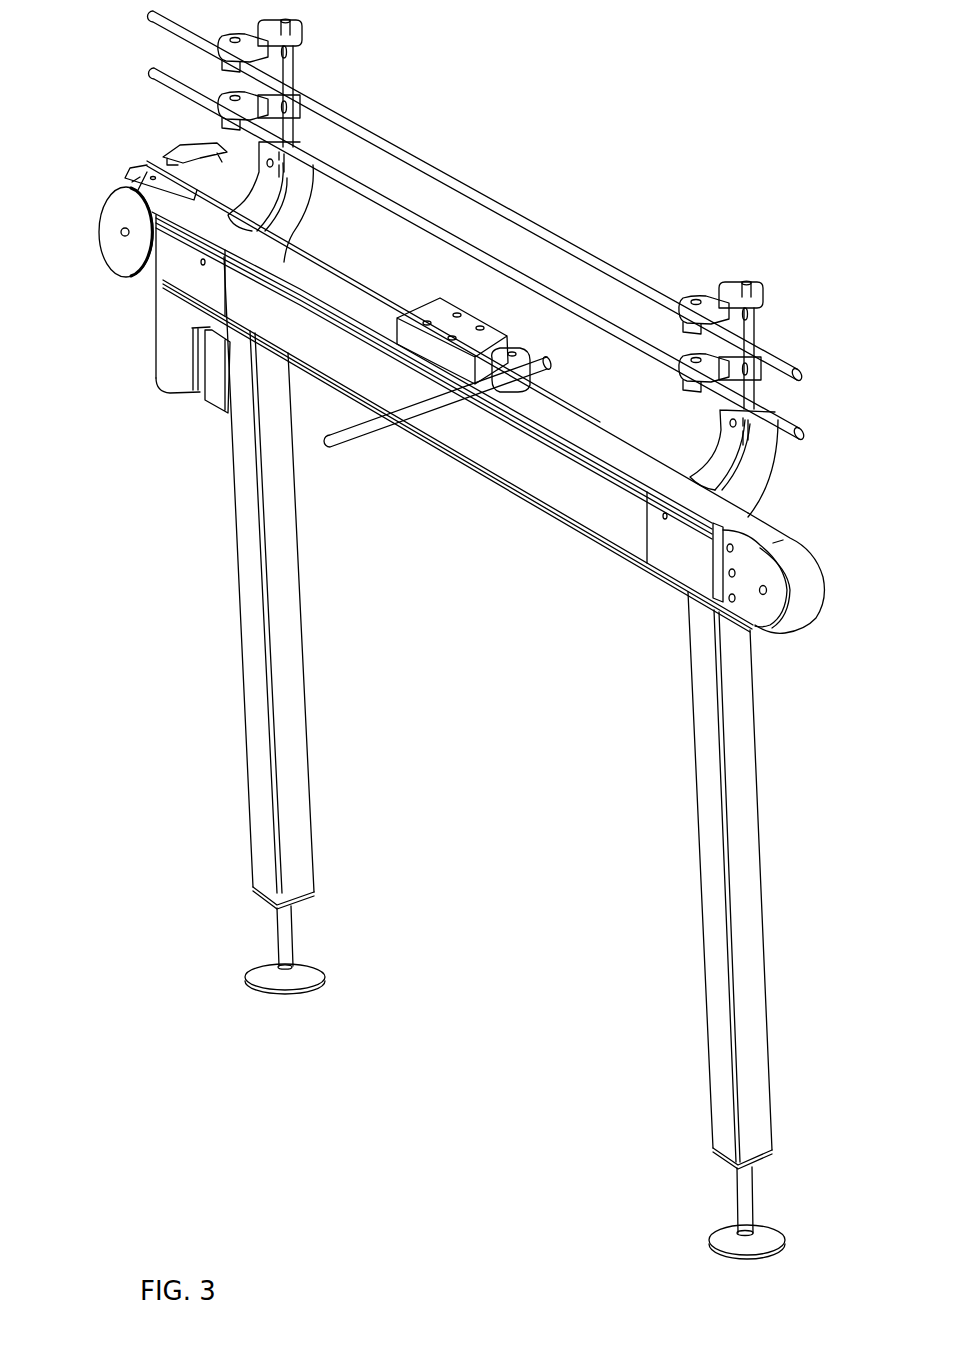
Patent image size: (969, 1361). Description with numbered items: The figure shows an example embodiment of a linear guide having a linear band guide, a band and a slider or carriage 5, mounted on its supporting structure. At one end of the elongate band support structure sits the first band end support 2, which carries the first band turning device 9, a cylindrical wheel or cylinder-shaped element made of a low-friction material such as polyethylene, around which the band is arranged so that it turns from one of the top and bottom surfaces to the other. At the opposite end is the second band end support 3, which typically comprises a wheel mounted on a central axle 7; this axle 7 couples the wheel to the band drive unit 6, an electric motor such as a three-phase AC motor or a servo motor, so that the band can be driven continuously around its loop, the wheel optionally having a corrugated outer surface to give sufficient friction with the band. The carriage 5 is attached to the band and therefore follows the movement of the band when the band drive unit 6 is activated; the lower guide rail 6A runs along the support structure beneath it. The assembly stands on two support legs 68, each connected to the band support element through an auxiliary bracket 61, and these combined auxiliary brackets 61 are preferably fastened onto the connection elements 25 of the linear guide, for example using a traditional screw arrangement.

The first band end support 2 is at (763, 613).
The second band end support 3 is at (148, 165).
The slider or carriage 5 is at (425, 305).
The band drive unit 6 is at (172, 397).
The lower guide rail 6A is at (450, 460).
The axle 7 is at (125, 234).
The first band turning device 9 is at (117, 212).
The connection elements 25 is at (180, 272).
The auxiliary bracket 61 is at (303, 218).
The support leg 68 is at (300, 613).